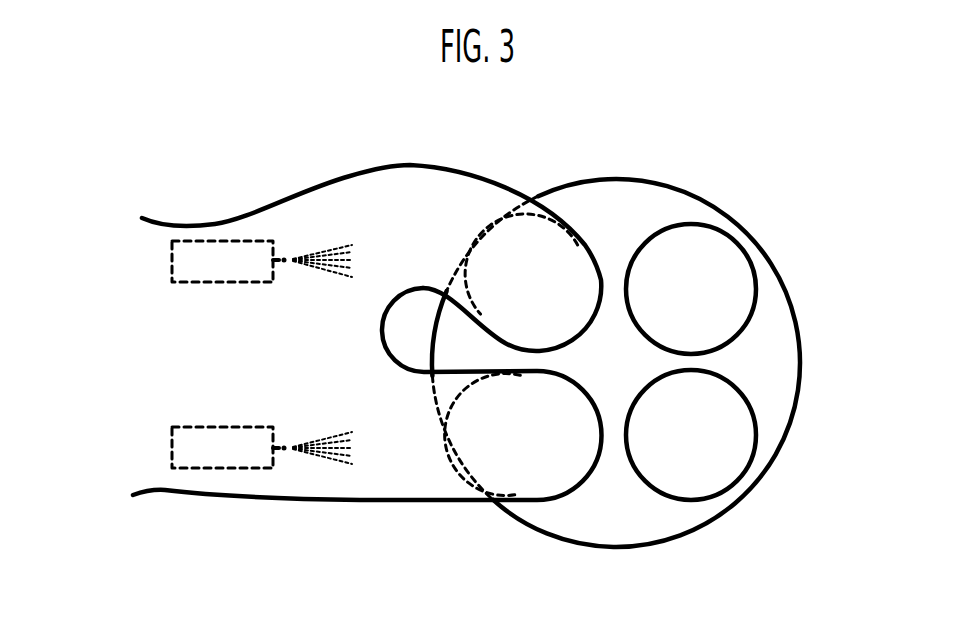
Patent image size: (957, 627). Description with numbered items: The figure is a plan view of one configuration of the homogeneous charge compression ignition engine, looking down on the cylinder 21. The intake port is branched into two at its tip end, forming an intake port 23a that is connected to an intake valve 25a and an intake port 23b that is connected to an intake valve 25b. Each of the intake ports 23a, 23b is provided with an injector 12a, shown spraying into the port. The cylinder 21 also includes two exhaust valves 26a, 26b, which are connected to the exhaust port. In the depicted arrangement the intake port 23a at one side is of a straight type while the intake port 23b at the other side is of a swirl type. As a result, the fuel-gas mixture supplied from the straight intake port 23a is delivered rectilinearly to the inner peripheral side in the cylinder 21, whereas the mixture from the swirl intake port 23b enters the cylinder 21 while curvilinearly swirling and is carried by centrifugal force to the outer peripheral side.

The cylinder 21 is at (800, 332).
The intake port 23a is at (440, 500).
The intake port 23b is at (475, 170).
The intake valve 25a is at (562, 496).
The intake valve 25b is at (600, 267).
The exhaust valve 26a is at (717, 497).
The exhaust valve 26b is at (720, 226).
The injector 12a is at (172, 258).